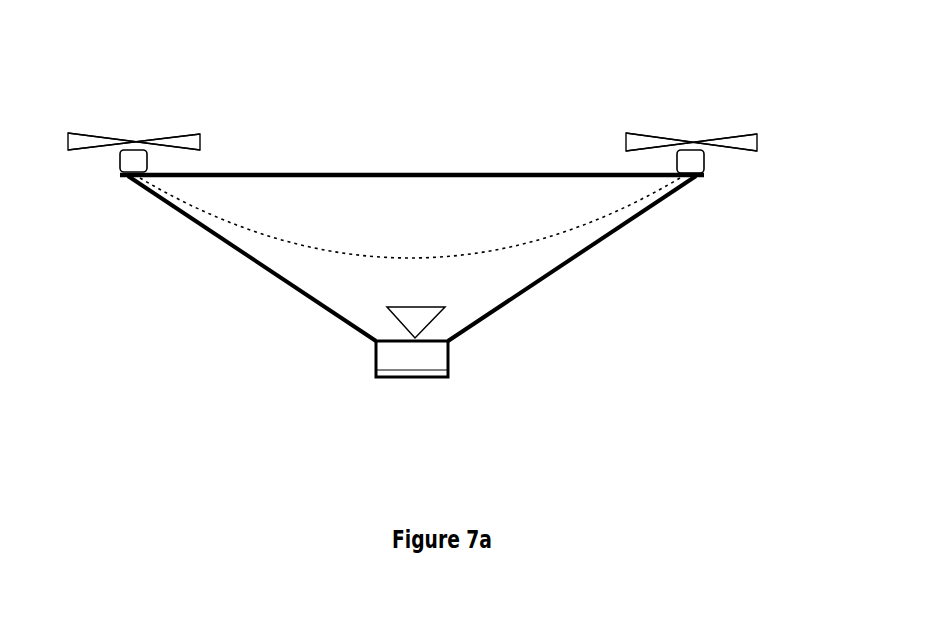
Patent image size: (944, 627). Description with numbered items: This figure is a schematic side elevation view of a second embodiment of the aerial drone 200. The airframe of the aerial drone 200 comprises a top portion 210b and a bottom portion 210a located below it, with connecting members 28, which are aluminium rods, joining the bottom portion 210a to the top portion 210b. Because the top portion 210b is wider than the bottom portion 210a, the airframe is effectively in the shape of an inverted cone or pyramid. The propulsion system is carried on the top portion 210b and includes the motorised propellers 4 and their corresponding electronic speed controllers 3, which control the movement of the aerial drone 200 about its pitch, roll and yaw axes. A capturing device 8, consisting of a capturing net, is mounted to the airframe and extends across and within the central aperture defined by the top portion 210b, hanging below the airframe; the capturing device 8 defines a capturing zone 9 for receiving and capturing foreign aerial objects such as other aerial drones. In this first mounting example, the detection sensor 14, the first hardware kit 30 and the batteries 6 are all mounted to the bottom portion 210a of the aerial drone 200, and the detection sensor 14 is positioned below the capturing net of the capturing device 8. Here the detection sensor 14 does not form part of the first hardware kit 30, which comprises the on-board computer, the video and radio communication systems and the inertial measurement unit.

The aerial drone 200 is at (134, 96).
The top portion 210b is at (324, 172).
The motorised propellers 4 is at (626, 142).
The electronic speed controllers 3 is at (688, 160).
The capturing zone 9 is at (421, 221).
The detection sensor 14 is at (398, 318).
The capturing device 8 is at (560, 227).
The connecting members 28 is at (533, 282).
The batteries 6 is at (448, 357).
The first hardware kit 30 is at (375, 362).
The bottom portion 210a is at (387, 378).